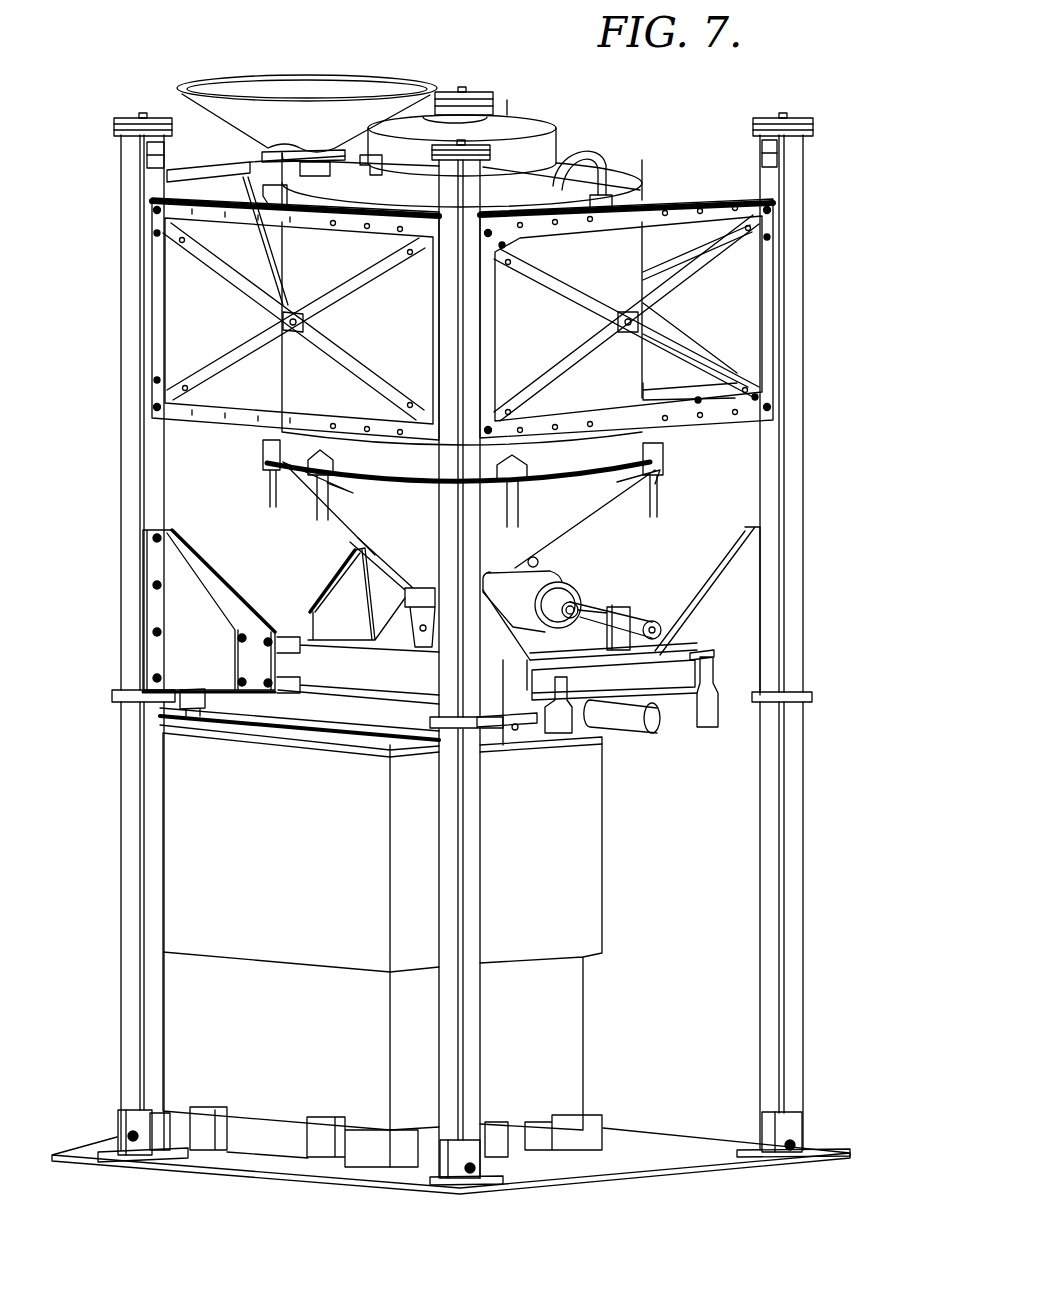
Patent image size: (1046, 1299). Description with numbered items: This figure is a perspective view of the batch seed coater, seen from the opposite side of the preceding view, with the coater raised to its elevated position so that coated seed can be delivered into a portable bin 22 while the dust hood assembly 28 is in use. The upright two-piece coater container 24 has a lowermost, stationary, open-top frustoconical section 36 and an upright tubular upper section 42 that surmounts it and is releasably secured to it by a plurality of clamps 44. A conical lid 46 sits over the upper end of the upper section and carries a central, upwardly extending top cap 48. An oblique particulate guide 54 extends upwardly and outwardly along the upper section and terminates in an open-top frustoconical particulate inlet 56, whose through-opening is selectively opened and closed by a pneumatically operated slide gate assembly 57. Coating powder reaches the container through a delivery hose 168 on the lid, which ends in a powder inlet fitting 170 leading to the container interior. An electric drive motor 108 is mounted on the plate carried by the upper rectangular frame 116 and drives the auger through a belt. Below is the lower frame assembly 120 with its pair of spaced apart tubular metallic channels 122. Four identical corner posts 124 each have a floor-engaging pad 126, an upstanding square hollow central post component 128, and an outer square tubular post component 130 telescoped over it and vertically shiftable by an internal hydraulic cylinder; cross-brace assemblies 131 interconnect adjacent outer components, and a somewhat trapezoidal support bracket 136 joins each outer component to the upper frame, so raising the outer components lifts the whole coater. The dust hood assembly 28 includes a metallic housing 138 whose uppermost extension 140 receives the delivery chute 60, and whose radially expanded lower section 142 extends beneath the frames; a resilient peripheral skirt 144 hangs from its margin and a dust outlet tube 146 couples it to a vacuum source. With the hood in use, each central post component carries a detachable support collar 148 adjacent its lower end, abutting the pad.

The portable bin 22 is at (610, 926).
The coater container 24 is at (337, 156).
The dust hood assembly 28 is at (201, 740).
The frustoconical section 36 is at (583, 506).
The tubular upper section 42 is at (297, 377).
The clamps 44 is at (264, 455).
The conical lid 46 is at (622, 184).
The top cap 48 is at (520, 113).
The particulate guide 54 is at (263, 262).
The particulate inlet 56 is at (250, 82).
The slide gate assembly 57 is at (228, 162).
The delivery chute 60 is at (377, 592).
The electric drive motor 108 is at (565, 587).
The upper rectangular frame 116 is at (715, 651).
The lower frame assembly 120 is at (543, 741).
The tubular metallic channels 122 is at (280, 712).
The corner posts 124 is at (120, 206).
The floor-engaging pad 126 is at (125, 1157).
The central post component 128 is at (152, 1030).
The outer square tubular post component 130 is at (448, 330).
The cross-brace assemblies 131 is at (207, 371).
The support bracket 136 is at (175, 607).
The metallic housing 138 is at (332, 560).
The uppermost extension 140 is at (330, 592).
The lower section 142 is at (190, 705).
The peripheral skirt 144 is at (333, 746).
The dust outlet tube 146 is at (640, 730).
The support collar 148 is at (137, 1117).
The delivery hose 168 is at (603, 183).
The powder inlet fitting 170 is at (374, 170).